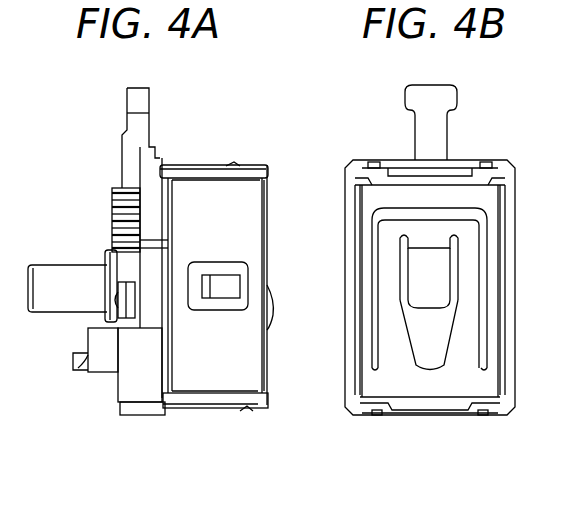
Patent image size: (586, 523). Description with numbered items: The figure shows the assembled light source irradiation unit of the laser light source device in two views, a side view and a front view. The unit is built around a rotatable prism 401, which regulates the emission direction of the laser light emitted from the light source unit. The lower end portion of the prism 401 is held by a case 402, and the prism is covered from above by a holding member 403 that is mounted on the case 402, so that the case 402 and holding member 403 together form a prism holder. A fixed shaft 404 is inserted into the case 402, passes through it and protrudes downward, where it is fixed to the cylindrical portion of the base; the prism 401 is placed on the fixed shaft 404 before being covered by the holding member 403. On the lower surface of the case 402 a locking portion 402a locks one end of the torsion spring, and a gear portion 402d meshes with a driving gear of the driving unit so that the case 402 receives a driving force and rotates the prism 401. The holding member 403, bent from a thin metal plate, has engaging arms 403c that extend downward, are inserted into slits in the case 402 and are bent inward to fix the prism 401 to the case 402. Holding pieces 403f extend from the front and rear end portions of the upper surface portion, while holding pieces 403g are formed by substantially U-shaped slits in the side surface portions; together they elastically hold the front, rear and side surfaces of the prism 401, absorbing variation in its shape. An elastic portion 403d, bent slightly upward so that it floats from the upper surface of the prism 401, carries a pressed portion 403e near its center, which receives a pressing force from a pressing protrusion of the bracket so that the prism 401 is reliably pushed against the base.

In FIG. 4A, the prism 401 is at (197, 406).
In FIG. 4B, the prism 401 is at (420, 344).
In FIG. 4A, the case 402 is at (118, 400).
In FIG. 4B, the case 402 is at (490, 162).
In FIG. 4A, the locking portion 402a is at (85, 362).
In FIG. 4A, the gear portion 402d is at (113, 205).
In FIG. 4A, the holding member 403 is at (211, 200).
In FIG. 4B, the holding member 403 is at (423, 186).
In FIG. 4A, the engaging arms 403c is at (124, 298).
In FIG. 4A, the elastic portion 403d is at (270, 240).
In FIG. 4B, the elastic portion 403d is at (585, 212).
In FIG. 4A, the pressed portion 403e is at (271, 310).
In FIG. 4B, the pressed portion 403e is at (420, 288).
In FIG. 4A, the holding pieces 403f is at (233, 164).
In FIG. 4B, the holding pieces 403f is at (378, 162).
In FIG. 4A, the holding pieces 403g is at (221, 286).
In FIG. 4A, the fixed shaft 404 is at (78, 265).